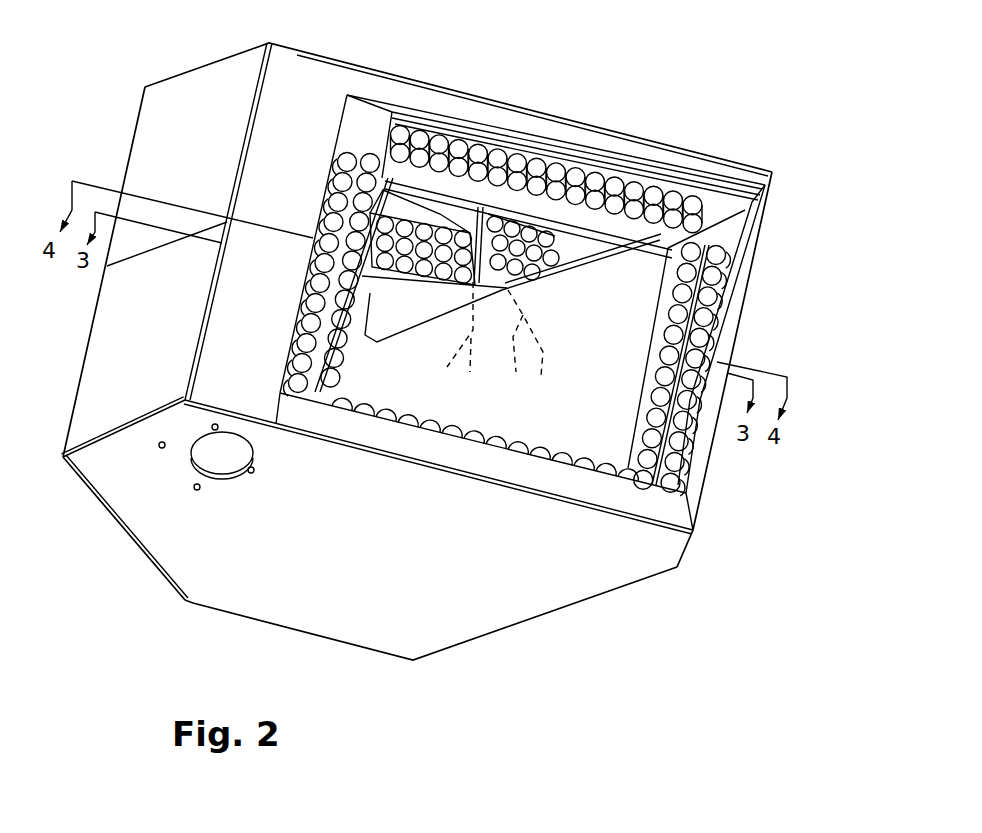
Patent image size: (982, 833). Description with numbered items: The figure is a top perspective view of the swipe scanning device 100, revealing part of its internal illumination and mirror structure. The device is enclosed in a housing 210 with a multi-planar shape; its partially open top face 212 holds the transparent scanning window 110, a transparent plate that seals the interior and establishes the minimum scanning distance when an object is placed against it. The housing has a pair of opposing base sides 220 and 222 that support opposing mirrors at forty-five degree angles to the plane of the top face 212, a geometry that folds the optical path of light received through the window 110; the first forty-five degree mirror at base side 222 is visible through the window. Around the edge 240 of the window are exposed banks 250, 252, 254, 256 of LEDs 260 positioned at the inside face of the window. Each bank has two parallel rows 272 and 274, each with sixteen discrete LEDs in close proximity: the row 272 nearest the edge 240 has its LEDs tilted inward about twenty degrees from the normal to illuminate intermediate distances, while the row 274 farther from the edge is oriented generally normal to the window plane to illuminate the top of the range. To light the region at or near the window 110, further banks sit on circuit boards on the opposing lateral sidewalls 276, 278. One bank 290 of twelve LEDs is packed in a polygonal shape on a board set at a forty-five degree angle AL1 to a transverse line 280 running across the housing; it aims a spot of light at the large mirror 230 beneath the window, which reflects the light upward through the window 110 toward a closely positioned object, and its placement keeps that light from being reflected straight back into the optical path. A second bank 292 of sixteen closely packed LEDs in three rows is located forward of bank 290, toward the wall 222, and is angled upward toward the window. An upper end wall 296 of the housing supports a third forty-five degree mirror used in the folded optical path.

The scanning device 100 is at (503, 78).
The transparent scanning window 110 is at (630, 320).
The housing 210 is at (289, 74).
The top face 212 is at (343, 72).
The base side 220 is at (553, 611).
The base side 222 is at (113, 520).
The mirror 230 is at (593, 283).
The edge 240 is at (605, 175).
The bank 250 is at (580, 270).
The bank 252 is at (313, 233).
The bank 254 is at (468, 447).
The bank 256 is at (727, 327).
The LEDs 260 is at (445, 143).
The row 272 is at (338, 155).
The row 274 is at (367, 160).
The sidewall 276 is at (525, 118).
The sidewall 278 is at (308, 580).
The transverse line 280 is at (442, 336).
The bank 290 is at (533, 265).
The bank 292 is at (408, 281).
The upper end wall 296 is at (98, 348).
The angle AL1 is at (523, 344).